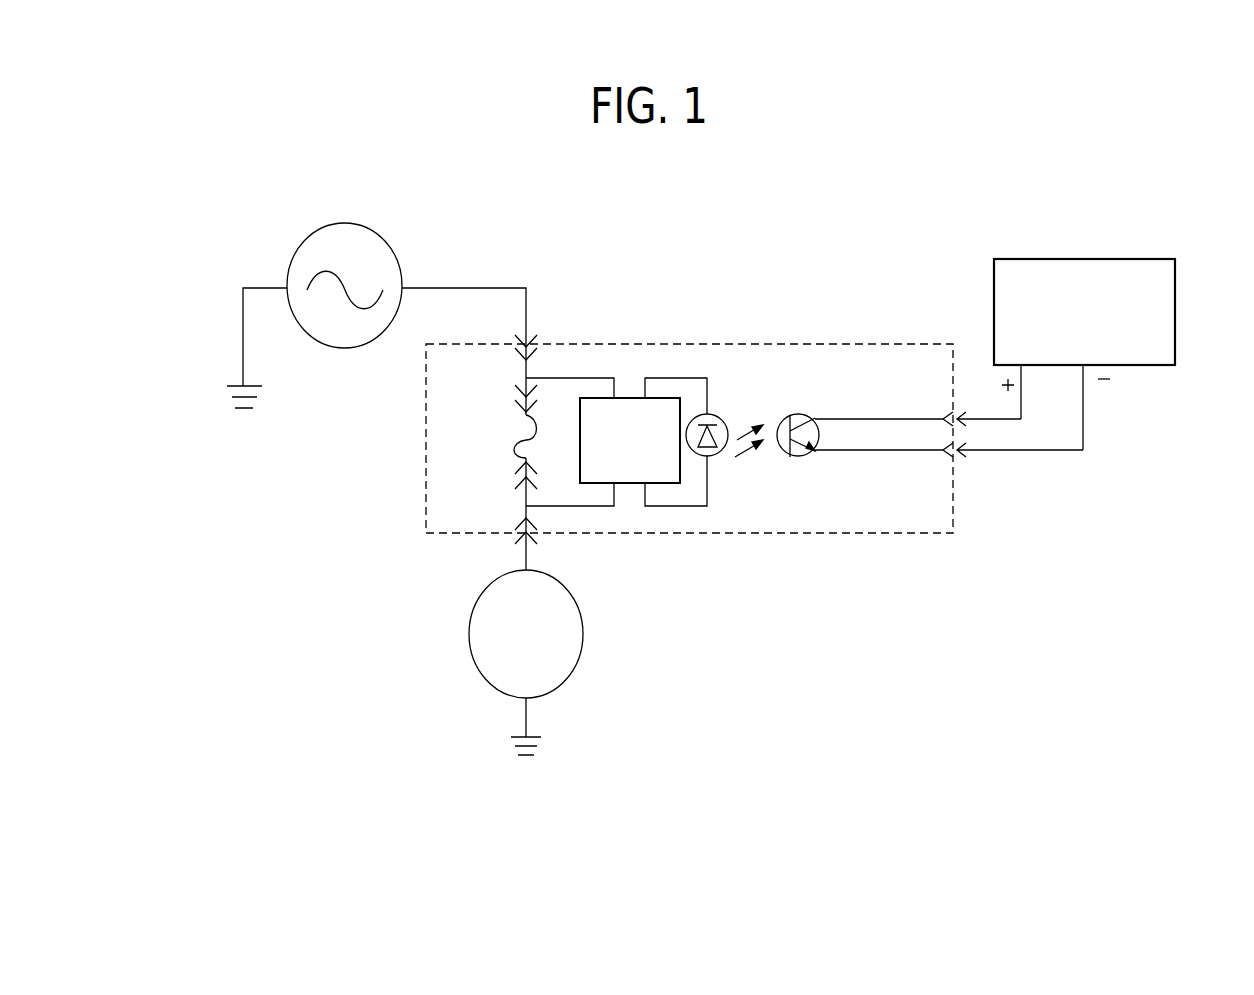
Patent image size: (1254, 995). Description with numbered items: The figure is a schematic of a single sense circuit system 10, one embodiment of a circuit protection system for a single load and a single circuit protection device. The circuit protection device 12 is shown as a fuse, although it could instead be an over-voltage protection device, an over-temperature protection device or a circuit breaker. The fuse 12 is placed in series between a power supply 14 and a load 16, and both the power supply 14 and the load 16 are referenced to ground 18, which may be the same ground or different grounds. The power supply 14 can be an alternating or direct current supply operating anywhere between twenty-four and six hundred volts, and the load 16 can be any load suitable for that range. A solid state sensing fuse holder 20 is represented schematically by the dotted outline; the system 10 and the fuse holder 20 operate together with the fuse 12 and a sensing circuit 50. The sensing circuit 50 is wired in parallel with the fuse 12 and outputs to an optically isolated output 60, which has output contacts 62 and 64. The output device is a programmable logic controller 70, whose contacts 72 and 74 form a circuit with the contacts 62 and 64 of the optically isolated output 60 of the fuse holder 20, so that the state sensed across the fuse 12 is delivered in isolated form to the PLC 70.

The system 10 is at (875, 211).
The circuit protection device 12 is at (523, 457).
The power supply 14 is at (400, 260).
The load 16 is at (583, 640).
The ground 18 is at (253, 408).
The solid state sensing fuse holder 20 is at (954, 534).
The sensing circuit 50 is at (630, 485).
The optically isolated output 60 is at (804, 410).
The output contact 62 is at (962, 410).
The output contact 64 is at (962, 455).
The programmable logic controller 70 is at (1175, 259).
The contact 72 is at (1021, 360).
The contact 74 is at (1083, 365).